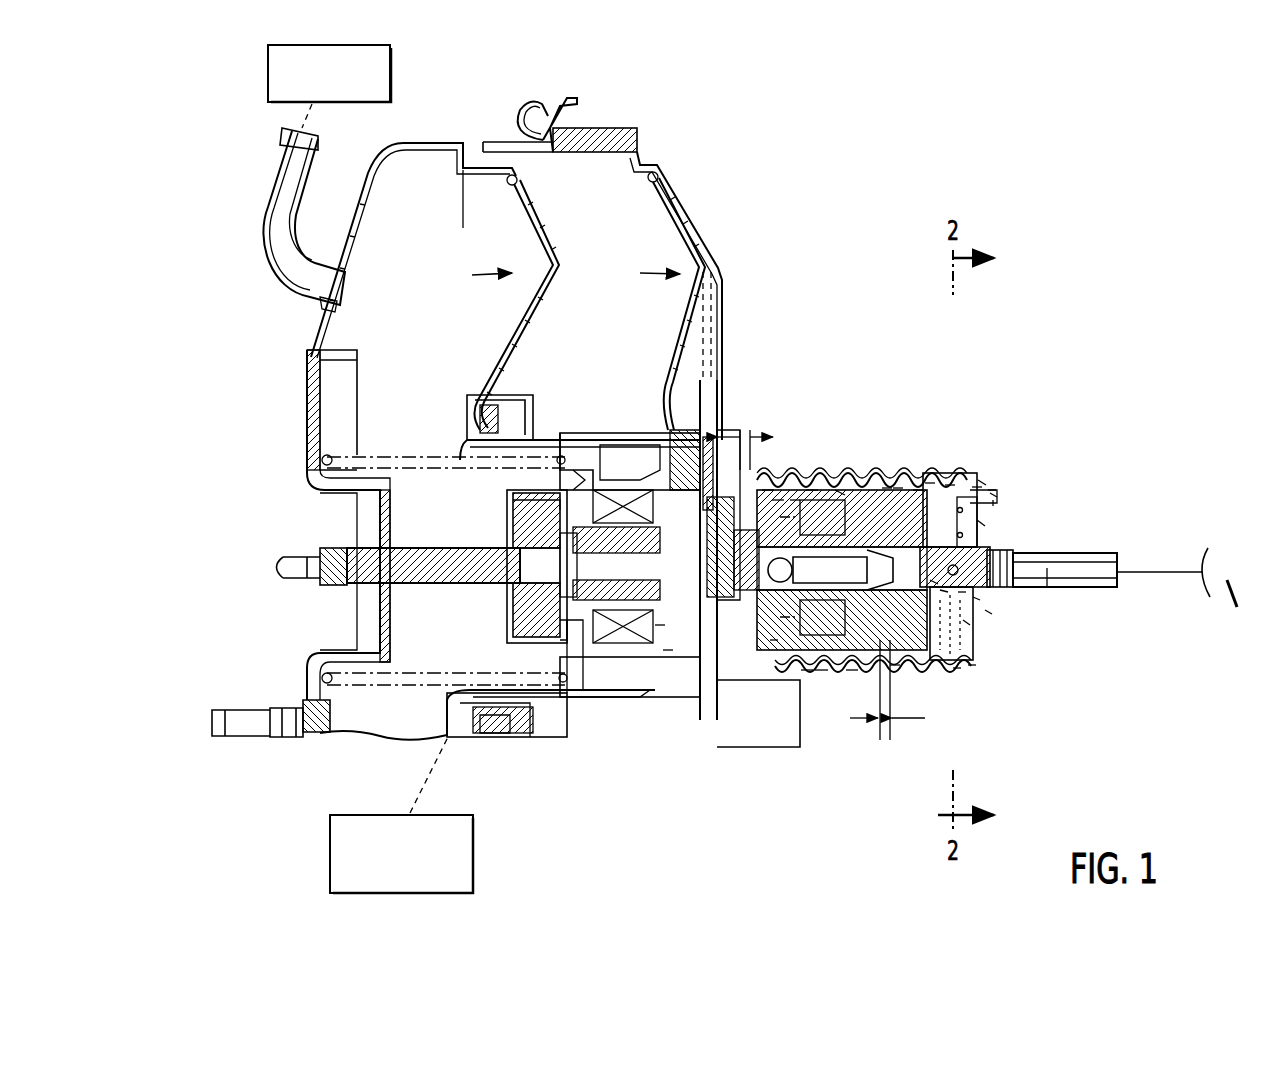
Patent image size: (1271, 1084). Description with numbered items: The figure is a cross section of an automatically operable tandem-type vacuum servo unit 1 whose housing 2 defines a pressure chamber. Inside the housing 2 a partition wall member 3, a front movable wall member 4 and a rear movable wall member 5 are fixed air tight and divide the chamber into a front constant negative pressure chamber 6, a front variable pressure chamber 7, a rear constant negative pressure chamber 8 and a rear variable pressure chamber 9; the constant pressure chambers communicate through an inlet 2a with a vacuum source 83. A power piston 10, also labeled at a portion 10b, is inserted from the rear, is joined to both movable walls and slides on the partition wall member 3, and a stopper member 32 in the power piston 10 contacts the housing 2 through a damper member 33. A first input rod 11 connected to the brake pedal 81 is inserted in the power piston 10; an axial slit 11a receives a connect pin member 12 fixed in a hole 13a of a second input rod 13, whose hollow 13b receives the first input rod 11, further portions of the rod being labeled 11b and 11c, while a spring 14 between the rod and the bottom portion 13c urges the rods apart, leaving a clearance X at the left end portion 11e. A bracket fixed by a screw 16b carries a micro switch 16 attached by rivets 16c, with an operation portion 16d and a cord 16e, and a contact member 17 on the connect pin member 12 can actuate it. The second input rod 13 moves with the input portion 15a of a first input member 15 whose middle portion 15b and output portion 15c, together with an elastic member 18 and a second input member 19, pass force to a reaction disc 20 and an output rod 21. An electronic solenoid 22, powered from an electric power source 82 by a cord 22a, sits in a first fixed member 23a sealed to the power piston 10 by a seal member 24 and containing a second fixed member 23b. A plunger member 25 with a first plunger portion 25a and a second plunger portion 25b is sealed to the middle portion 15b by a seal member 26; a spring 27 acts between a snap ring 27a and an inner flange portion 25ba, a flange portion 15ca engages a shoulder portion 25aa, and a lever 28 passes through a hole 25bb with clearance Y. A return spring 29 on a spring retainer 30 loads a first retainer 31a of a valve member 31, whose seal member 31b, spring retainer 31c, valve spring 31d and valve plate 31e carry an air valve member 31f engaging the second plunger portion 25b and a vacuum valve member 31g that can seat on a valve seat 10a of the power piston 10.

The vacuum servo unit 1 is at (808, 290).
The housing 2 is at (445, 143).
The inlet 2a is at (268, 190).
The partition wall member 3 is at (540, 157).
The front movable wall member 4 is at (483, 278).
The rear movable wall member 5 is at (664, 301).
The front constant negative pressure chamber 6 is at (408, 317).
The front variable pressure chamber 7 is at (563, 268).
The rear constant negative pressure chamber 8 is at (601, 313).
The rear variable pressure chamber 9 is at (701, 248).
The power piston 10 is at (862, 490).
The valve seat 10a is at (840, 495).
The valve body flange 10b is at (721, 450).
The first input rod 11 is at (1103, 567).
The slit 11a is at (942, 590).
The output rod portion 11b is at (985, 610).
The output rod portion 11c is at (963, 620).
The left end portion 11e is at (988, 490).
The connect pin member 12 is at (935, 582).
The second input rod 13 is at (790, 670).
The hole 13a is at (962, 592).
The hollow 13b is at (980, 482).
The bottom portion 13c is at (895, 665).
The spring 14 is at (977, 488).
The first input member 15 is at (553, 632).
The input portion 15a is at (772, 640).
The middle portion 15b is at (660, 625).
The output portion 15c is at (523, 578).
The flange portion 15ca is at (668, 650).
The micro switch 16 is at (997, 493).
The screw 16b is at (1050, 572).
The rivets 16c is at (977, 523).
The operation portion 16d is at (990, 495).
The cord 16e is at (993, 503).
The contact member 17 is at (978, 600).
The elastic member 18 is at (778, 500).
The second input member 19 is at (548, 565).
The reaction disc 20 is at (533, 530).
The output rod 21 is at (437, 557).
The electronic solenoid 22 is at (620, 500).
The cord 22a is at (540, 740).
The first fixed member 23a is at (587, 478).
The second fixed member 23b is at (513, 500).
The seal member 24 is at (645, 530).
The plunger member 25 is at (553, 738).
The first plunger portion 25a is at (612, 490).
The shoulder portion 25aa is at (600, 720).
The second plunger portion 25b is at (812, 490).
The inner flange portion 25ba is at (820, 670).
The hole 25bb is at (768, 490).
The seal member 26 is at (745, 655).
The spring 27 is at (775, 670).
The snap ring 27a is at (795, 500).
The lever 28 is at (710, 445).
The return spring 29 is at (957, 668).
The spring retainer 30 is at (972, 665).
The valve member 31 is at (955, 492).
The first retainer 31a is at (950, 485).
The seal member 31b is at (930, 485).
The spring retainer 31c is at (918, 495).
The valve spring 31d is at (852, 670).
The valve plate 31e is at (807, 670).
The air valve member 31f is at (898, 490).
The vacuum valve member 31g is at (887, 490).
The stopper member 32 is at (685, 435).
The damper member 33 is at (700, 630).
The brake pedal 81 is at (1208, 560).
The electric power source 82 is at (330, 863).
The vacuum source 83 is at (268, 83).
The clearance X is at (887, 700).
The clearance Y is at (745, 434).